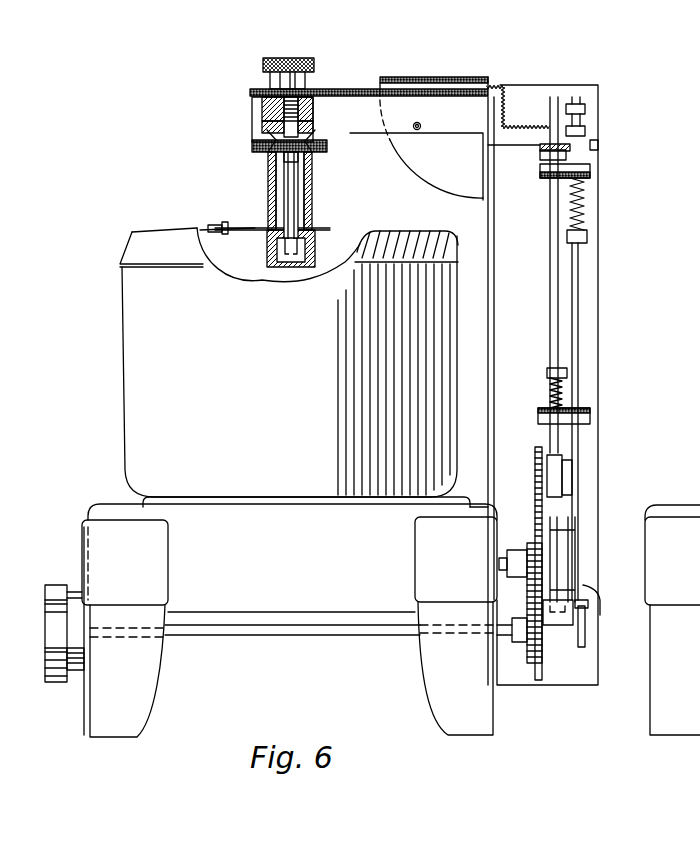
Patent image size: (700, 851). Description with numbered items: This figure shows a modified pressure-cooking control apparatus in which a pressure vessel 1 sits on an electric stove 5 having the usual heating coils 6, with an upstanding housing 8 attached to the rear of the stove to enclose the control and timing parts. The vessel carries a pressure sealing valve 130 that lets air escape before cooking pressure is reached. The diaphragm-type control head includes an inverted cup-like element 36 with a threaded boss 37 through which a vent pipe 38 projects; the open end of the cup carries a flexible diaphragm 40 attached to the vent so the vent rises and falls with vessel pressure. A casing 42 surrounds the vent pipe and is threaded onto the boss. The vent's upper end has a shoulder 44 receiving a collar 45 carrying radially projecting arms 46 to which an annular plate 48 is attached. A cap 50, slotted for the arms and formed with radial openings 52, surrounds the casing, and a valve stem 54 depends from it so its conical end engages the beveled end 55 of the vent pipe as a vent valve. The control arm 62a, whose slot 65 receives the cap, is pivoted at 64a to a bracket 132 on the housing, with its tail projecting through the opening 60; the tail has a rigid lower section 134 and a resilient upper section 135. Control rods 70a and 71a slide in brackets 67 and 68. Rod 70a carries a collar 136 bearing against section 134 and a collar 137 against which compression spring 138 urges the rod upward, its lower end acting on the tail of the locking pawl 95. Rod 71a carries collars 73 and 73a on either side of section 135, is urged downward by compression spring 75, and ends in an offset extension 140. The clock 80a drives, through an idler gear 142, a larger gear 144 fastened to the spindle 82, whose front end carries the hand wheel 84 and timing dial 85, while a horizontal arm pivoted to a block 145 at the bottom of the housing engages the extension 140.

The pressure vessel 1 is at (289, 362).
The electric stove 5 is at (391, 620).
The heating coils 6 is at (452, 500).
The housing 8 is at (590, 357).
The cup-like element 36 is at (285, 232).
The threaded boss 37 is at (278, 230).
The vent pipe 38 is at (304, 228).
The flexible diaphragm 40 is at (274, 268).
The casing 42 is at (312, 205).
The shoulder 44 is at (284, 153).
The collar 45 is at (300, 153).
The radially projecting arms 46 is at (252, 147).
The annular plate 48 is at (255, 140).
The cap 50 is at (306, 100).
The radial openings 52 is at (300, 116).
The valve stem 54 is at (283, 122).
The beveled end 55 is at (283, 128).
The opening 60 is at (520, 92).
The control arm 62a is at (400, 105).
The pivot 64a is at (420, 123).
The elongate slot 65 is at (260, 88).
The bracket 67 is at (592, 170).
The bracket 68 is at (592, 418).
The control rod 70a is at (558, 282).
The control rod 71a is at (578, 306).
The collar 73 is at (587, 108).
The collar 73a is at (587, 130).
The compression spring 75 is at (584, 203).
The clock 80a is at (575, 517).
The spindle 82 is at (240, 638).
The hand wheel 84 is at (57, 585).
The timing dial 85 is at (86, 693).
The locking pawl 95 is at (575, 490).
The pressure sealing valve 130 is at (213, 226).
The bracket 132 is at (416, 145).
The lower section 134 is at (505, 150).
The upper section 135 is at (523, 120).
The collar 136 is at (572, 148).
The collar 137 is at (550, 370).
The compression spring 138 is at (548, 395).
The offset extension 140 is at (600, 605).
The idler gear 142 is at (537, 532).
The gear 144 is at (535, 665).
The block 145 is at (560, 622).